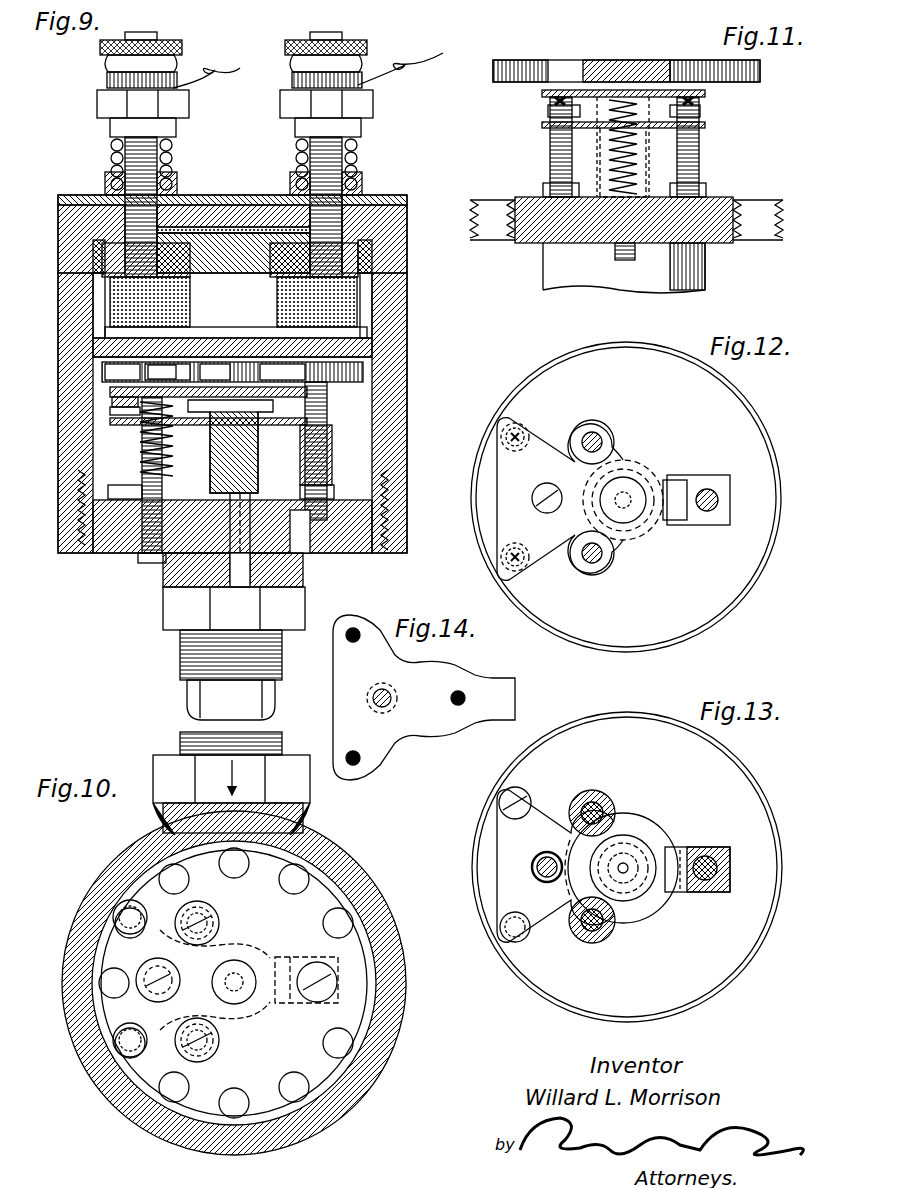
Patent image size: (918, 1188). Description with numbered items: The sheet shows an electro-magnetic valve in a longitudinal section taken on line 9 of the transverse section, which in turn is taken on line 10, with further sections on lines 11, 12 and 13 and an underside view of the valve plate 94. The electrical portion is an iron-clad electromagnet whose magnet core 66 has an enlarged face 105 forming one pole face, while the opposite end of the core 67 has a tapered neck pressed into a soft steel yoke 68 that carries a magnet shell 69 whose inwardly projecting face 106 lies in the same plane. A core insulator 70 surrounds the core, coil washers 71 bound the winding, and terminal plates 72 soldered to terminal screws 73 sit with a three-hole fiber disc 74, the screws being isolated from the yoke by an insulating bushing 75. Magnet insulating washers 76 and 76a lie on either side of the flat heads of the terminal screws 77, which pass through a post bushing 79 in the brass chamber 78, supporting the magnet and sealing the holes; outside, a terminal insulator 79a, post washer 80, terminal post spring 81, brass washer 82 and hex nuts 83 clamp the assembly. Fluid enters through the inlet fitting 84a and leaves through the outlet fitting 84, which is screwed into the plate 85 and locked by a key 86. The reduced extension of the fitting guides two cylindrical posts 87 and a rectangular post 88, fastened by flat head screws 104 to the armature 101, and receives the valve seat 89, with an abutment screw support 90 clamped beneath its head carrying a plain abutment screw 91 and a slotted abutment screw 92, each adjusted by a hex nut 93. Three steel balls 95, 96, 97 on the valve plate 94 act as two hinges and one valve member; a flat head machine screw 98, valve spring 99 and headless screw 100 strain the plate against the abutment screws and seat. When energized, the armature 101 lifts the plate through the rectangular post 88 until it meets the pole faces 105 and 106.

In FIG. 10, the section line 9— 9 is at (435, 984).
In FIG. 9, the section line 10— 10 is at (430, 357).
In FIG. 10, the section line 11— 11 is at (128, 1153).
In FIG. 9, the section line 12— 12 is at (45, 368).
In FIG. 9, the section line 13— 13 is at (45, 410).
In FIG. 9, the magnet core 66 is at (241, 233).
In FIG. 9, the core opposite end 67 is at (256, 240).
In FIG. 9, the soft steel yoke 68 is at (275, 210).
In FIG. 9, the magnet shell 69 is at (370, 320).
In FIG. 9, the core insulator 70 is at (262, 305).
In FIG. 9, the coil washers 71 is at (360, 295).
In FIG. 9, the terminal plates 72 is at (102, 272).
In FIG. 9, the terminal screws 73 is at (95, 215).
In FIG. 9, the three-hole fiber disc 74 is at (190, 200).
In FIG. 9, the insulating bushing 75 is at (95, 254).
In FIG. 9, the magnet insulating washer 76 is at (222, 206).
In FIG. 9, the magnet insulating washer 76a is at (205, 228).
In FIG. 9, the terminal screws 77 is at (157, 33).
In FIG. 9, the brass chamber 78 is at (97, 212).
In FIG. 10, the brass chamber 78 is at (345, 865).
In FIG. 9, the post bushing 79 is at (100, 232).
In FIG. 9, the terminal insulator 79a is at (380, 200).
In FIG. 9, the post washer 80 is at (110, 185).
In FIG. 9, the terminal post spring 81 is at (111, 146).
In FIG. 9, the brass washer 82 is at (110, 126).
In FIG. 9, the hex nuts 83 is at (100, 97).
In FIG. 9, the outlet fitting 84 is at (178, 600).
In FIG. 11, the outlet fitting 84 is at (558, 263).
In FIG. 9, the inlet fitting 84a is at (170, 768).
In FIG. 9, the plate 85 is at (365, 523).
In FIG. 11, the plate 85 is at (720, 243).
In FIG. 12, the plate 85 is at (740, 415).
In FIG. 13, the plate 85 is at (725, 768).
In FIG. 9, the key 86 is at (320, 557).
In FIG. 9, the cylindrical posts 87 is at (416, 474).
In FIG. 10, the cylindrical posts 87 is at (210, 908).
In FIG. 11, the cylindrical posts 87 is at (550, 150).
In FIG. 12, the cylindrical posts 87 is at (612, 437).
In FIG. 13, the cylindrical posts 87 is at (614, 803).
In FIG. 10, the rectangular post 88 is at (304, 955).
In FIG. 12, the rectangular post 88 is at (710, 480).
In FIG. 13, the rectangular post 88 is at (710, 847).
In FIG. 9, the valve seat 89 is at (322, 410).
In FIG. 11, the valve seat 89 is at (615, 97).
In FIG. 12, the valve seat 89 is at (645, 520).
In FIG. 13, the valve seat 89 is at (636, 840).
In FIG. 9, the abutment screw support 90 is at (110, 425).
In FIG. 11, the abutment screw support 90 is at (705, 126).
In FIG. 13, the abutment screw support 90 is at (555, 910).
In FIG. 10, the plain abutment screw 91 is at (110, 1045).
In FIG. 11, the plain abutment screw 91 is at (700, 112).
In FIG. 12, the plain abutment screw 91 is at (520, 575).
In FIG. 13, the plain abutment screw 91 is at (515, 912).
In FIG. 9, the slotted abutment screw 92 is at (115, 412).
In FIG. 10, the slotted abutment screw 92 is at (120, 905).
In FIG. 11, the slotted abutment screw 92 is at (548, 110).
In FIG. 12, the slotted abutment screw 92 is at (525, 430).
In FIG. 13, the slotted abutment screw 92 is at (527, 795).
In FIG. 9, the hex nut 93 is at (85, 490).
In FIG. 11, the hex nut 93 is at (545, 190).
In FIG. 9, the valve plate 94 is at (310, 395).
In FIG. 11, the valve plate 94 is at (705, 93).
In FIG. 12, the valve plate 94 is at (552, 535).
In FIG. 14, the valve plate 94 is at (400, 728).
In FIG. 9, the steel ball 95 is at (125, 397).
In FIG. 11, the steel ball 95 is at (560, 97).
In FIG. 12, the steel ball 95 is at (518, 445).
In FIG. 14, the steel ball 95 is at (354, 751).
In FIG. 11, the steel ball 96 is at (688, 97).
In FIG. 12, the steel ball 96 is at (515, 545).
In FIG. 14, the steel ball 96 is at (354, 643).
In FIG. 9, the steel ball 97 is at (240, 538).
In FIG. 12, the steel ball 97 is at (628, 497).
In FIG. 14, the steel ball 97 is at (466, 697).
In FIG. 9, the flat head machine screw 98 is at (162, 372).
In FIG. 10, the flat head machine screw 98 is at (170, 978).
In FIG. 12, the flat head machine screw 98 is at (532, 494).
In FIG. 13, the flat head machine screw 98 is at (545, 852).
In FIG. 14, the flat head machine screw 98 is at (398, 700).
In FIG. 9, the valve spring 99 is at (235, 390).
In FIG. 11, the valve spring 99 is at (612, 155).
In FIG. 13, the valve spring 99 is at (537, 864).
In FIG. 9, the headless screw 100 is at (150, 560).
In FIG. 11, the headless screw 100 is at (622, 260).
In FIG. 9, the armature 101 is at (355, 375).
In FIG. 10, the armature 101 is at (305, 1055).
In FIG. 11, the armature 101 is at (637, 60).
In FIG. 9, the flat head screws 104 is at (332, 440).
In FIG. 10, the flat head screws 104 is at (220, 918).
In FIG. 12, the flat head screws 104 is at (596, 440).
In FIG. 13, the flat head screws 104 is at (598, 808).
In FIG. 9, the enlarged face 105 is at (105, 312).
In FIG. 9, the inwardly projecting face 106 is at (130, 342).